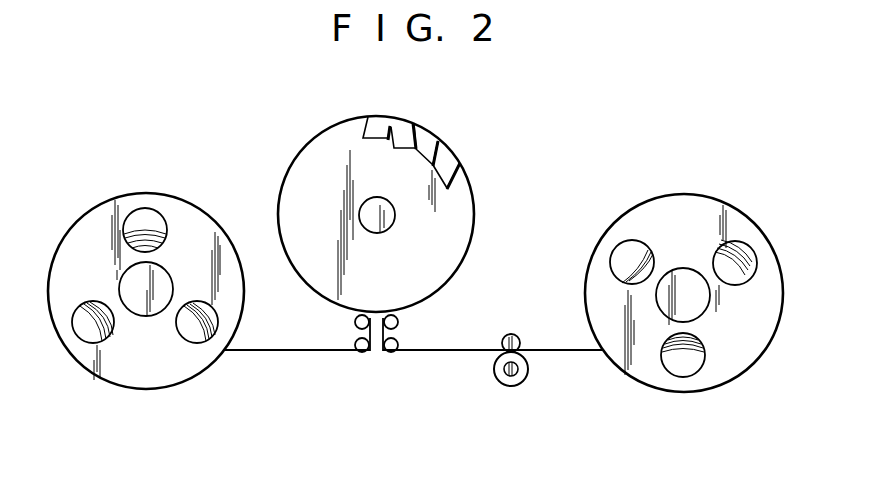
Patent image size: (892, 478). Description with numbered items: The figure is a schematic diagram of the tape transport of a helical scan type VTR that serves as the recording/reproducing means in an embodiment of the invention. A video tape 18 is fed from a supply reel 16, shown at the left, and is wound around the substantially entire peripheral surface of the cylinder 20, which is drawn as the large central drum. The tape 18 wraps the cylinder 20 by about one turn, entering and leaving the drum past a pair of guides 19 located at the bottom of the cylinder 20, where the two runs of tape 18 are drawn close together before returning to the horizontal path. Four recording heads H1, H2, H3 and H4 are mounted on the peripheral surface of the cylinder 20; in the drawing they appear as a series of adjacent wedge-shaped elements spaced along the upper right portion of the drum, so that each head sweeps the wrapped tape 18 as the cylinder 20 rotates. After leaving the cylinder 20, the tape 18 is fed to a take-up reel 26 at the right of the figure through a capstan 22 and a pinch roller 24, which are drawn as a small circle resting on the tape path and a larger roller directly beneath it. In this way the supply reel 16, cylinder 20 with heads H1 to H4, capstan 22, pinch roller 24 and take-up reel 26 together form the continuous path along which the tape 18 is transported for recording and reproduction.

The supply reel 16 is at (202, 218).
The video tape 18 is at (258, 352).
The guide rollers 19 is at (354, 325).
The cylinder 20 is at (300, 172).
The capstan 22 is at (519, 338).
The pinch roller 24 is at (495, 372).
The take-up reel 26 is at (622, 222).
The recording head H1 is at (378, 116).
The recording head H2 is at (414, 123).
The recording head H3 is at (440, 140).
The recording head H4 is at (461, 163).